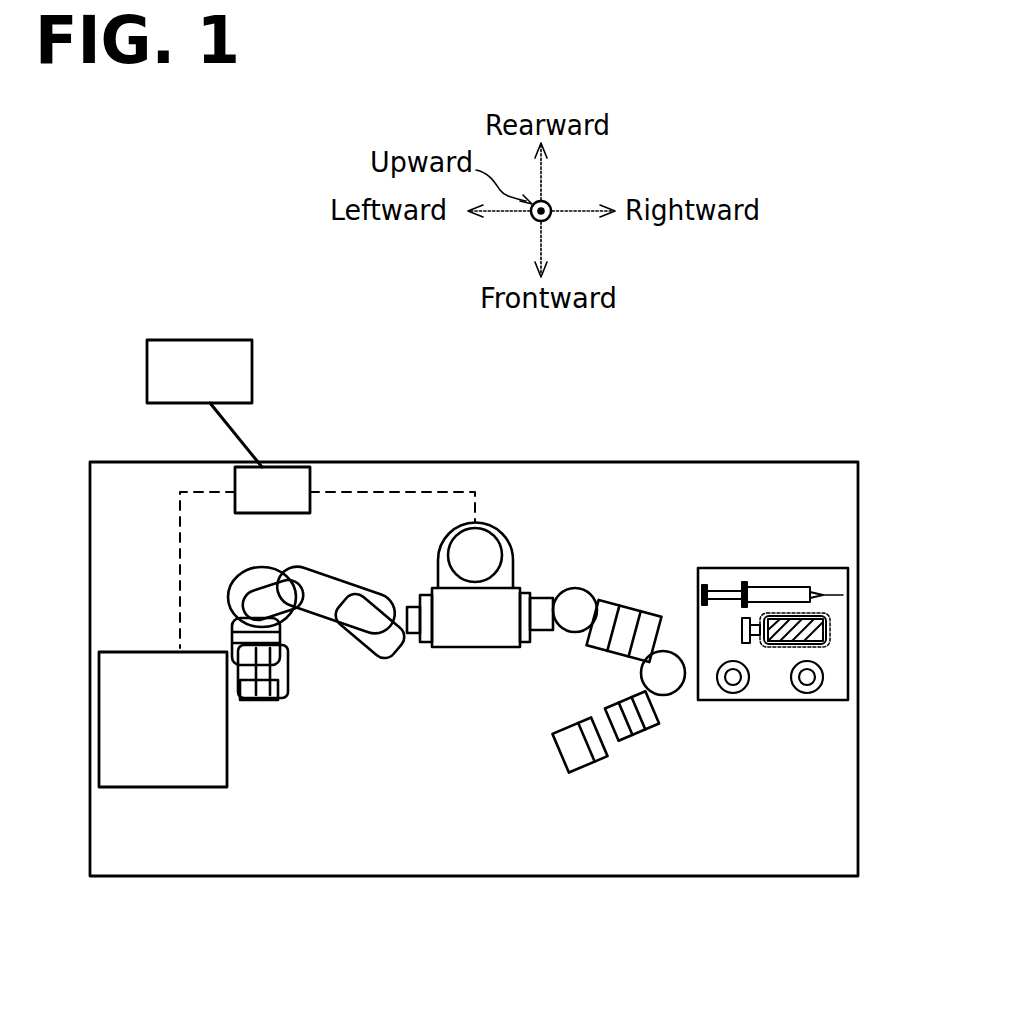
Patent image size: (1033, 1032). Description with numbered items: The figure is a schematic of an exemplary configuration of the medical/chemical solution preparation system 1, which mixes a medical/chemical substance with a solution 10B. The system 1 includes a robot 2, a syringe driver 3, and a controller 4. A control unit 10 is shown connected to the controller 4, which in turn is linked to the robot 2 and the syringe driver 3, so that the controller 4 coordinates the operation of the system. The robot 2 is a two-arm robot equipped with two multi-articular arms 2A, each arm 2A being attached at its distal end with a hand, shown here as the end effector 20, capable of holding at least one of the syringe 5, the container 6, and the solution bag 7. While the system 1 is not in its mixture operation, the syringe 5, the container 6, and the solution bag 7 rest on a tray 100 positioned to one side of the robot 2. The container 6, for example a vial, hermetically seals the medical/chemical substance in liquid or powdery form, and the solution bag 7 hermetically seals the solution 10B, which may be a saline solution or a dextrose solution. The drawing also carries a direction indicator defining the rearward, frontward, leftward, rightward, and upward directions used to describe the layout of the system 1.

The medical/chemical solution preparation system 1 is at (572, 422).
The robot 2 is at (456, 621).
The arm 2A is at (642, 607).
The end effector 20 is at (557, 718).
The syringe driver 3 is at (113, 740).
The controller 4 is at (290, 467).
The syringe 5 is at (802, 585).
The container 6 is at (803, 693).
The solution bag 7 is at (846, 622).
The controller 10 is at (253, 358).
The solution 10B is at (830, 637).
The tray 100 is at (755, 700).